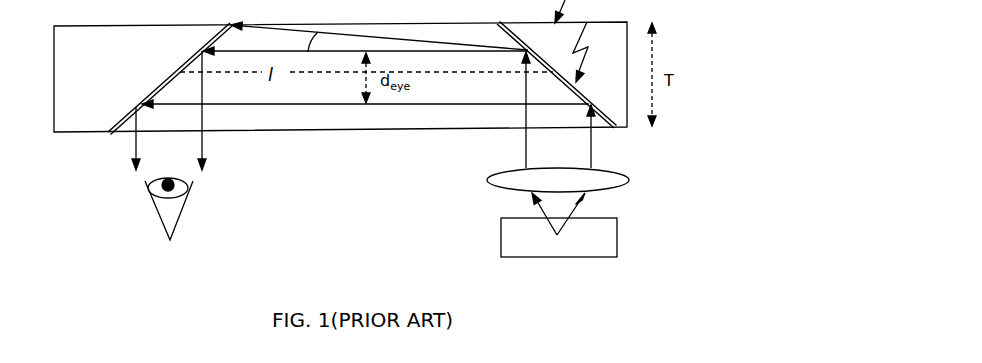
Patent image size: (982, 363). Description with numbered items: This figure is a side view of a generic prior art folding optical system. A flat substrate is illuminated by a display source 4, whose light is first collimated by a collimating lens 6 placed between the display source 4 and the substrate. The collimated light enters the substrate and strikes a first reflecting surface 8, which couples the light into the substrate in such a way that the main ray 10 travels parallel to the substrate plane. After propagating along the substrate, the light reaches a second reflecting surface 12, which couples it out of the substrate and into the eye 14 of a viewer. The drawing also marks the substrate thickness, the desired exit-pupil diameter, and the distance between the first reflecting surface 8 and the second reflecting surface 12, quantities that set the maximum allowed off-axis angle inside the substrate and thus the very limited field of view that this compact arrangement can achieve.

The display source 4 is at (559, 239).
The collimating lens 6 is at (602, 187).
The first reflecting surface 8 is at (579, 41).
The main ray 10 is at (549, 75).
The second reflecting surface 12 is at (170, 79).
The eye 14 is at (178, 228).